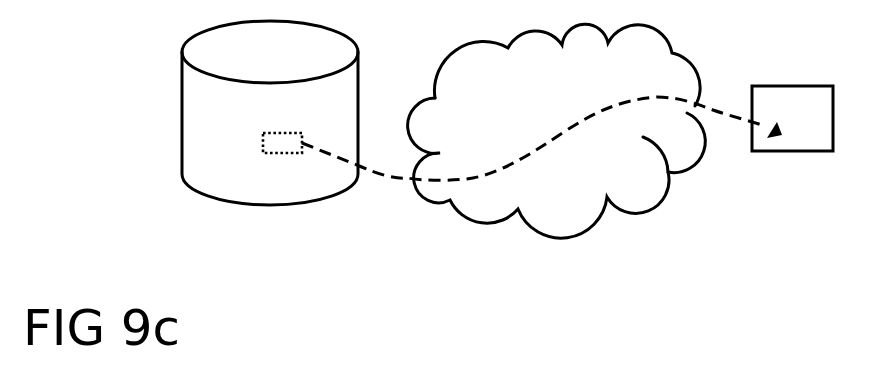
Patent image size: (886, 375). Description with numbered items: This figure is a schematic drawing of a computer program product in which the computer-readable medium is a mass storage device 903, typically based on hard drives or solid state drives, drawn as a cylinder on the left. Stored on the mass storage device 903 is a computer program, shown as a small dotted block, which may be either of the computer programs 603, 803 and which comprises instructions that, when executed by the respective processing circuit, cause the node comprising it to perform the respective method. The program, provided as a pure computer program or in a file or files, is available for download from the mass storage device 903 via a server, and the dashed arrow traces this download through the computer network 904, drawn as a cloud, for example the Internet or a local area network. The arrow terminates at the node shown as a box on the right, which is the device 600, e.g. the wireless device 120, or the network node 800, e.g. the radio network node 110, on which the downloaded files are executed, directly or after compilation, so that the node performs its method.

The mass storage device 903 is at (181, 112).
The computer program 603 is at (269, 193).
The computer program 803 is at (272, 152).
The network cloud 904 is at (472, 225).
The device 600 is at (787, 166).
The wireless device 120 is at (787, 166).
The network node 800 is at (787, 166).
The radio network node 110 is at (772, 152).